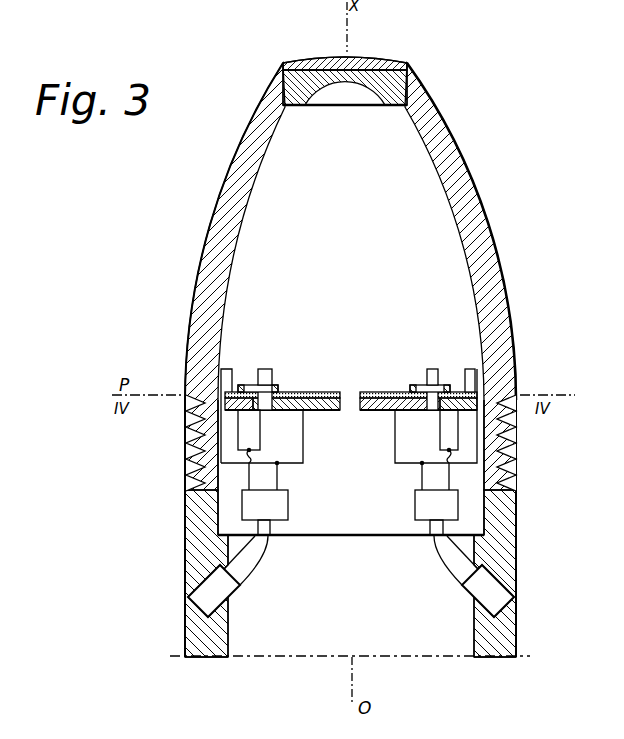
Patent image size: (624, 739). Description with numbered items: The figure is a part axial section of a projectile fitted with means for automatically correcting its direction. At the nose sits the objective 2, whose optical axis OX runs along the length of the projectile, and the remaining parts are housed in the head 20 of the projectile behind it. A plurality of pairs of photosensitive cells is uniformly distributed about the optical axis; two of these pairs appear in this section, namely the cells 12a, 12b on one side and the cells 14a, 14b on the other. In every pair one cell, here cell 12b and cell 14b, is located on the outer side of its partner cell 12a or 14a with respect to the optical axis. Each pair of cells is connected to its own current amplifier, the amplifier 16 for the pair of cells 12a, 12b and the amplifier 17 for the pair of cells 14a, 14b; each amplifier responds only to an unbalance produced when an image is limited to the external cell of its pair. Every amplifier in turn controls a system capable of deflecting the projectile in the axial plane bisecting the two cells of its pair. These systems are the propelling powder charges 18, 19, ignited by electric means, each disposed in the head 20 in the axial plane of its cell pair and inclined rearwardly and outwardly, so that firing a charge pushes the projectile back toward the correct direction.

The objective 2 is at (400, 72).
The head of the projectile 20 is at (470, 206).
The cell 12a is at (303, 412).
The cell 12b is at (219, 393).
The cell 14a is at (385, 411).
The cell 14b is at (478, 397).
The current amplifier 16 is at (272, 505).
The current amplifier 17 is at (430, 505).
The propelling powder charge 18 is at (218, 591).
The propelling powder charge 19 is at (484, 591).